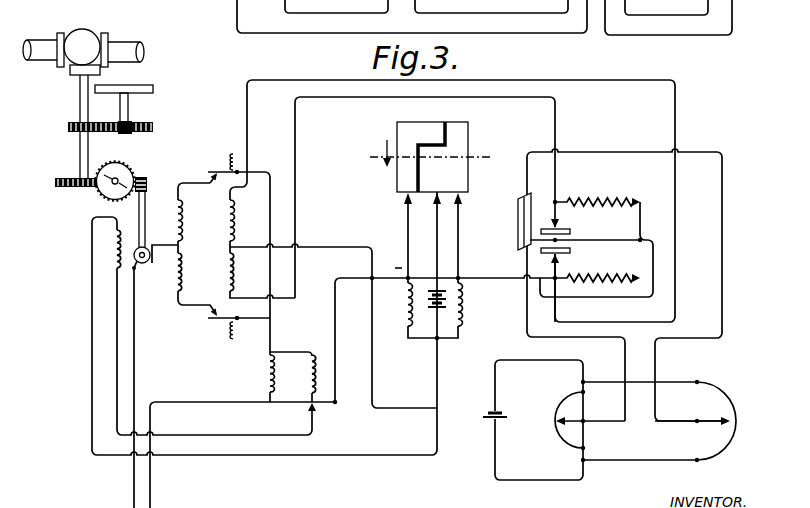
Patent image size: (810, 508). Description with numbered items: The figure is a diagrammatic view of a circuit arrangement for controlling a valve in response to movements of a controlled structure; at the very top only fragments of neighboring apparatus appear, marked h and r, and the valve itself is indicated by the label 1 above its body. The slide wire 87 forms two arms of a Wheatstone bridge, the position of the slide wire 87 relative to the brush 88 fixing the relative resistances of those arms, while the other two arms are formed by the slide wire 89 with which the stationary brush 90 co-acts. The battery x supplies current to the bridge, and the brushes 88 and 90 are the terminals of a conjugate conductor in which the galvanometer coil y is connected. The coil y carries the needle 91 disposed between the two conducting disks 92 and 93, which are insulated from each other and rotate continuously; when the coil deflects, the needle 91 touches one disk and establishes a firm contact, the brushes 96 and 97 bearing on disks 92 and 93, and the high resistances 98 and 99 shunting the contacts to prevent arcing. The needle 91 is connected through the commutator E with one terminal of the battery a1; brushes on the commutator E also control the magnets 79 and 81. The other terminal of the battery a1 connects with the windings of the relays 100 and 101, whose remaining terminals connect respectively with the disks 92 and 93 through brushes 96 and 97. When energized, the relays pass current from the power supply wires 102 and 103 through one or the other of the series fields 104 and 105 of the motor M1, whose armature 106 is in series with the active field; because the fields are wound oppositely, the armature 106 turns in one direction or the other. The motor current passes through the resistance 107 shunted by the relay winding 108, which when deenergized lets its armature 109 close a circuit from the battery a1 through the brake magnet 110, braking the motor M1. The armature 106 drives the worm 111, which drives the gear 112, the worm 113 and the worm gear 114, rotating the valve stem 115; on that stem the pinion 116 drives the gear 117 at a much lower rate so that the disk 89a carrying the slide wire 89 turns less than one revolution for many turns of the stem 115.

The valve 1 is at (86, 29).
The box (adjacent figure) h is at (232, 1).
The box (adjacent figure) r is at (262, 33).
The disk 89a is at (143, 84).
The shaft or stem 115 is at (80, 87).
The pinion 116 is at (68, 126).
The gear 117 is at (153, 128).
The worm gear 114 is at (58, 180).
The worm 113 is at (117, 178).
The gear 112 is at (100, 196).
The worm 111 is at (207, 173).
The brake magnet or solenoid 110 is at (116, 258).
The armature 106 is at (145, 263).
The electric motor M1 is at (163, 242).
The series field 105 is at (182, 213).
The series field 104 is at (182, 268).
The relay 101 is at (233, 213).
The relay 100 is at (233, 268).
The resistance 107 is at (265, 370).
The relay winding 108 is at (309, 370).
The armature 109 is at (316, 406).
The power supply wire 102 is at (133, 500).
The power supply wire 103 is at (151, 500).
The commutator E is at (469, 134).
The battery or source of current a1 is at (418, 306).
The magnet 79 is at (407, 318).
The magnet 81 is at (462, 306).
The brush 97 is at (553, 222).
The conducting disk or wheel 93 is at (572, 220).
The conducting disk or wheel 92 is at (570, 253).
The needle or pointer 91 is at (570, 240).
The high resistance 99 is at (606, 204).
The high resistance 98 is at (612, 275).
The brush 96 is at (540, 293).
The galvanometer coil y is at (517, 221).
The battery or source of current x is at (497, 419).
The slide wire 89 is at (561, 403).
The stationary brush 90 is at (592, 401).
The slide wire 87 is at (735, 407).
The brush 88 is at (737, 430).